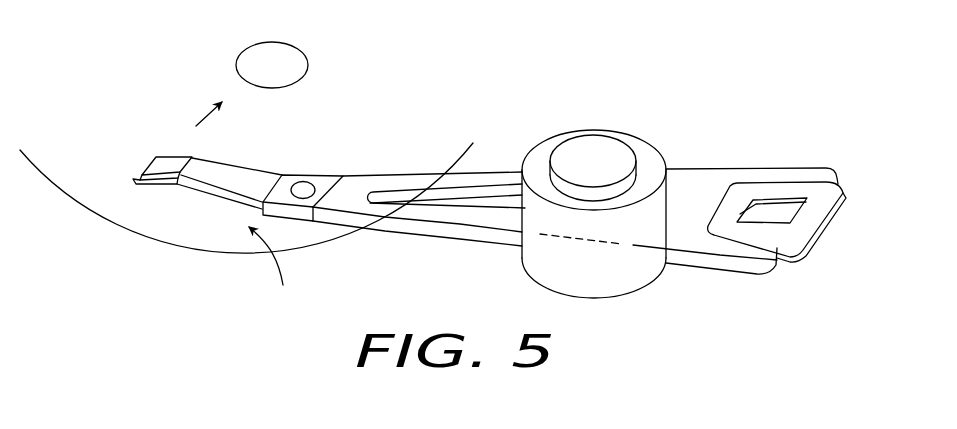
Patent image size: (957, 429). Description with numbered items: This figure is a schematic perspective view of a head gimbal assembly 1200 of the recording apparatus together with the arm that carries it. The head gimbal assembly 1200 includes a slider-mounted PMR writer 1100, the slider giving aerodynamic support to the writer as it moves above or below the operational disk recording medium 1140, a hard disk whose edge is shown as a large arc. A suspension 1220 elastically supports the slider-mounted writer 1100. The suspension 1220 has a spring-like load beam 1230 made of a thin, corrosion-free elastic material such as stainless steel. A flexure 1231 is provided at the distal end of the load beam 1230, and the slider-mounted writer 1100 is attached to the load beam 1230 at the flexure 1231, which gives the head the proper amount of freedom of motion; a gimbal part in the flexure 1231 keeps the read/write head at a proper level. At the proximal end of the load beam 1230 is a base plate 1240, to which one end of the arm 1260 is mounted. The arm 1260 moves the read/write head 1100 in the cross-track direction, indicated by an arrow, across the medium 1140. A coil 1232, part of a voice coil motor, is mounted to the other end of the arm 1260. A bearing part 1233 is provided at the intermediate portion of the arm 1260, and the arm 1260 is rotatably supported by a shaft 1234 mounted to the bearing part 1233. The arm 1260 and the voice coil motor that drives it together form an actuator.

The slider-mounted PMR writer 1100 is at (157, 163).
The disk recording medium 1140 is at (133, 233).
The head gimbal assembly 1200 is at (241, 234).
The suspension 1220 is at (451, 126).
The load beam 1230 is at (260, 182).
The flexure 1231 is at (143, 172).
The coil 1232 is at (817, 235).
The bearing part 1233 is at (543, 152).
The shaft 1234 is at (595, 153).
The base plate 1240 is at (340, 177).
The arm 1260 is at (405, 226).